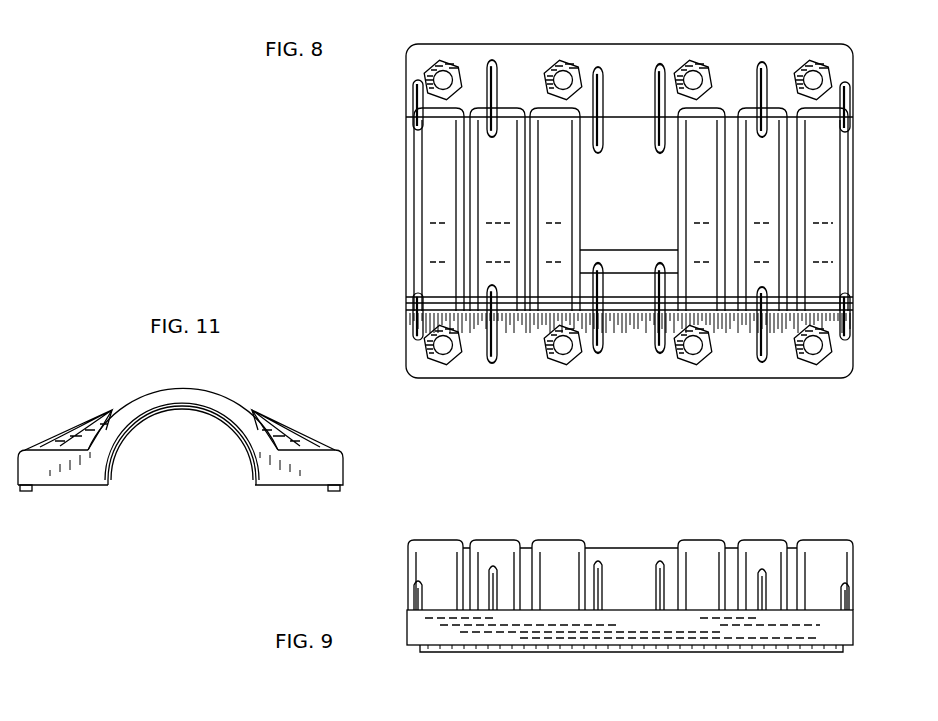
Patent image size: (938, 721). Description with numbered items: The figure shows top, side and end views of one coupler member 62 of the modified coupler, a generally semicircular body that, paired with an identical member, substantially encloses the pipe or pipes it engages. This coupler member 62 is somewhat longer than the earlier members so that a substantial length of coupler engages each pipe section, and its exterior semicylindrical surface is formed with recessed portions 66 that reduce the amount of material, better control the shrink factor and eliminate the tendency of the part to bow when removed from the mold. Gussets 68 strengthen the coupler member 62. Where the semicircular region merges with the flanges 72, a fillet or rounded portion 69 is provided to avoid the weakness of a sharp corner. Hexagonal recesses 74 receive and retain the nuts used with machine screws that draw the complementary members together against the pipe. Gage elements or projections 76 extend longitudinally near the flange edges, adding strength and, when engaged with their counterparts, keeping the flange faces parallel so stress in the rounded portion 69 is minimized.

In FIG. 8, the coupler member 62 is at (406, 226).
In FIG. 9, the coupler member 62 is at (410, 573).
In FIG. 11, the coupler member 62 is at (186, 380).
In FIG. 8, the recessed portions 66 is at (529, 108).
In FIG. 9, the recessed portions 66 is at (467, 542).
In FIG. 8, the gussets 68 is at (600, 62).
In FIG. 9, the gussets 68 is at (659, 562).
In FIG. 11, the gussets 68 is at (262, 418).
In FIG. 11, the fillet or rounded portion 69 is at (82, 424).
In FIG. 8, the flanges 72 is at (785, 50).
In FIG. 8, the hexagonal recesses 74 is at (560, 62).
In FIG. 9, the gage elements or projections 76 is at (576, 654).
In FIG. 11, the gage elements or projections 76 is at (28, 492).